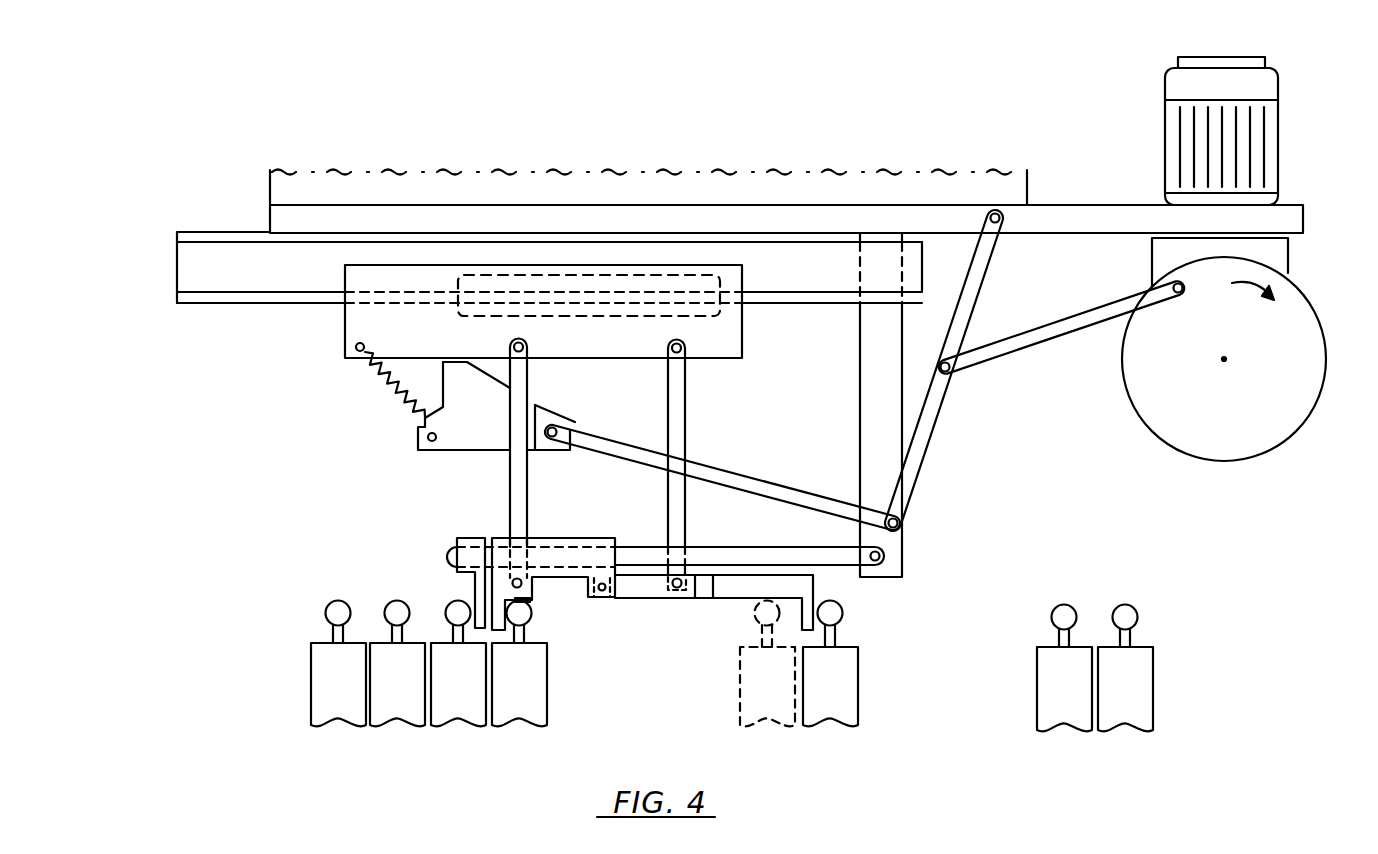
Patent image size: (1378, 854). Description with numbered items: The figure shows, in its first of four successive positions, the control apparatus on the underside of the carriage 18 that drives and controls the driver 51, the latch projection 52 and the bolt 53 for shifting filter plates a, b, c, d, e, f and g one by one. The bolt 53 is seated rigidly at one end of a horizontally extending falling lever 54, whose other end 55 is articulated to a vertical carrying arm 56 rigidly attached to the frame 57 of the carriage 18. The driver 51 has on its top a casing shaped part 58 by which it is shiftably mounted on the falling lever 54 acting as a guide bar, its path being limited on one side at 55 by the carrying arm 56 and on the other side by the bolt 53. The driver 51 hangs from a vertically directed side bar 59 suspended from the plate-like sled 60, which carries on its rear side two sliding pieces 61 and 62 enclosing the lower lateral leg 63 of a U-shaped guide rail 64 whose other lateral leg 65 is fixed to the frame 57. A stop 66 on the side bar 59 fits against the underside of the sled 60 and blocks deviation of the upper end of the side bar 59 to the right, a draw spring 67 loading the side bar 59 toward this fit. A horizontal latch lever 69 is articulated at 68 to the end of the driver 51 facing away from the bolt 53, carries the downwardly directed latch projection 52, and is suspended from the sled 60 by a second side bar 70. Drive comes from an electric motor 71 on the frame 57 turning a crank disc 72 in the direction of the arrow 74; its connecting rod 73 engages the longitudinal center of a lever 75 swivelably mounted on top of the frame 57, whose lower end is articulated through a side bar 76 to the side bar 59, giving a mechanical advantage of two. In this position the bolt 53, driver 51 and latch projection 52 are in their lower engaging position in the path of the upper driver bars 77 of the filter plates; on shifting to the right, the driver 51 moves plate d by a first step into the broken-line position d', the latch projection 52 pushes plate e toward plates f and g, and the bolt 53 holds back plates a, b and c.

The carriage 18 is at (840, 186).
The driver 51 is at (527, 603).
The latch projection 52 is at (813, 622).
The bolt 53 is at (477, 585).
The falling lever 54 is at (755, 555).
The other end of falling lever 55 is at (885, 557).
The vertical carrying arm 56 is at (862, 454).
The frame 57 is at (1083, 222).
The casing shaped part 58 is at (603, 540).
The side bar 59 is at (530, 484).
The sled 60 is at (604, 348).
The sliding piece 61 is at (713, 311).
The sliding piece 62 is at (707, 285).
The lower lateral leg of guide rail 63 is at (290, 303).
The U-shaped guide rail 64 is at (218, 278).
The lateral leg of guide rail 65 is at (222, 242).
The stop 66 is at (445, 363).
The draw spring 67 is at (383, 394).
The articulation point 68 is at (603, 592).
The latch lever 69 is at (736, 588).
The second side bar 70 is at (680, 421).
The electric motor 71 is at (1172, 121).
The crank disc 72 is at (1262, 440).
The connecting rod 73 is at (1054, 330).
The arrow 74 is at (1298, 300).
The lever 75 is at (930, 430).
The side bar 76 is at (763, 480).
The upper driver bars 77 is at (530, 617).
The filter plate a is at (338, 716).
The filter plate b is at (398, 716).
The filter plate c is at (459, 716).
The filter plate d is at (519, 699).
The shifted position of filter plate d d' is at (767, 688).
The filter plate e is at (830, 716).
The filter plate f is at (1064, 720).
The filter plate g is at (1127, 720).